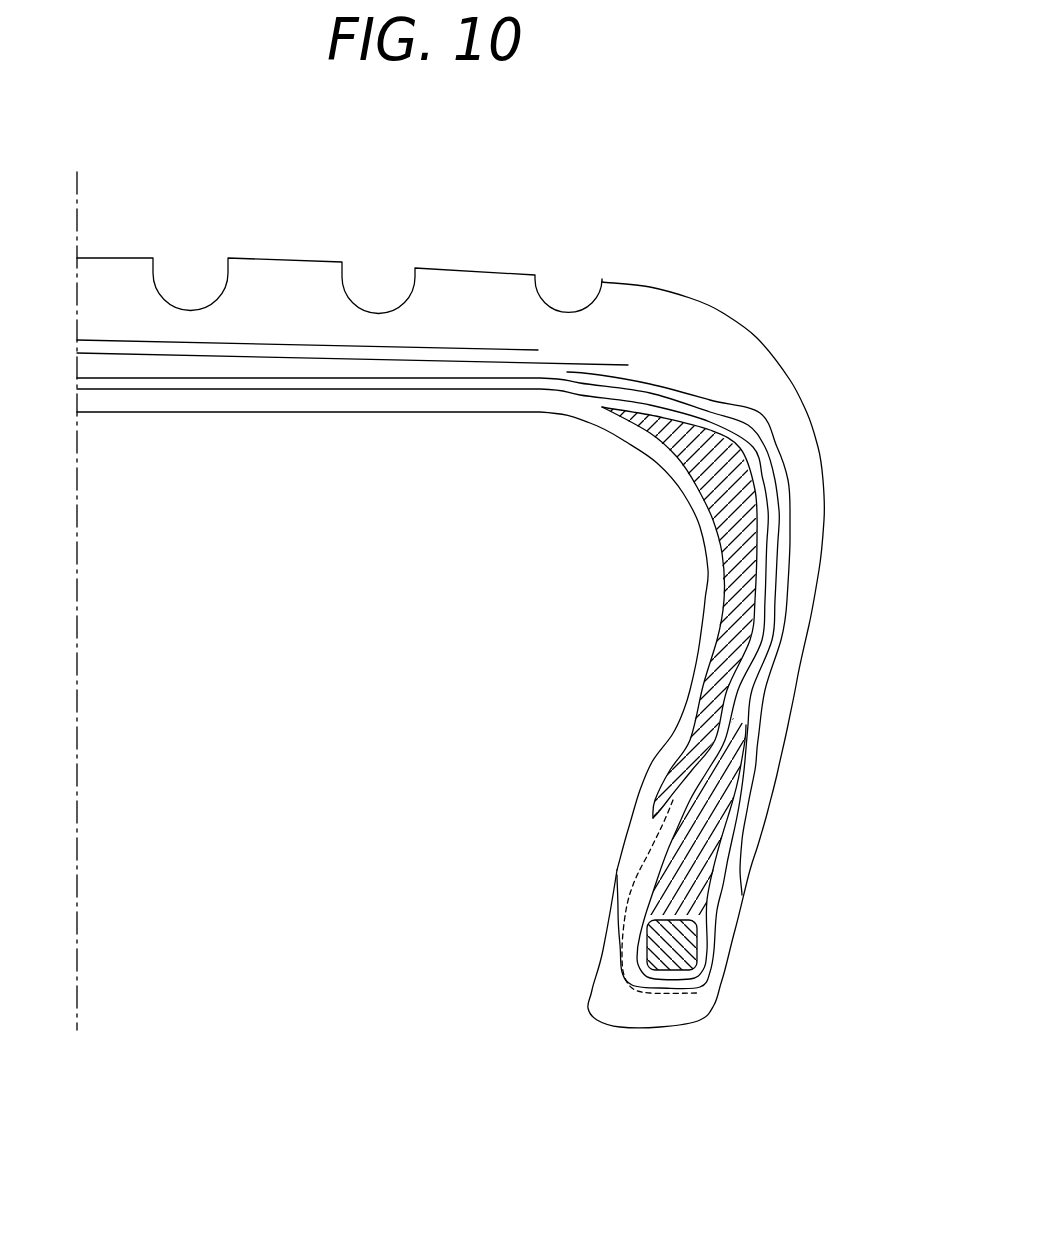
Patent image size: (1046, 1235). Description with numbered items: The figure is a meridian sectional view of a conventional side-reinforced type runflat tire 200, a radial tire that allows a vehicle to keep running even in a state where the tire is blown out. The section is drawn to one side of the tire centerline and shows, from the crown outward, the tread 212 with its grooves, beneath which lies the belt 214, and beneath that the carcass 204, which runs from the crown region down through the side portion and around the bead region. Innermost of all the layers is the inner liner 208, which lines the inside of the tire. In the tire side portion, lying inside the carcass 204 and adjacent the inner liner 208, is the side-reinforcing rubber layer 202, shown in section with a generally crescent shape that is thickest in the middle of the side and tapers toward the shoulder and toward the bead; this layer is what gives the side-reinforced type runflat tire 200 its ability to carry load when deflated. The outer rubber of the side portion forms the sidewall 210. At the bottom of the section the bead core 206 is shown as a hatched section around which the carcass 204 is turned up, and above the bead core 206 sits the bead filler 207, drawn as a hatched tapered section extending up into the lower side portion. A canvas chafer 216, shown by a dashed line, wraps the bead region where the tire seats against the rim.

The side-reinforced type runflat tire 200 is at (698, 251).
The side-reinforcing rubber layer 202 is at (685, 453).
The carcass 204 is at (183, 378).
The bead core 206 is at (647, 935).
The bead filler 207 is at (703, 838).
The inner liner 208 is at (422, 412).
The sidewall 210 is at (793, 636).
The tread 212 is at (471, 270).
The belt 214 is at (276, 357).
The canvas chafer 216 is at (665, 995).